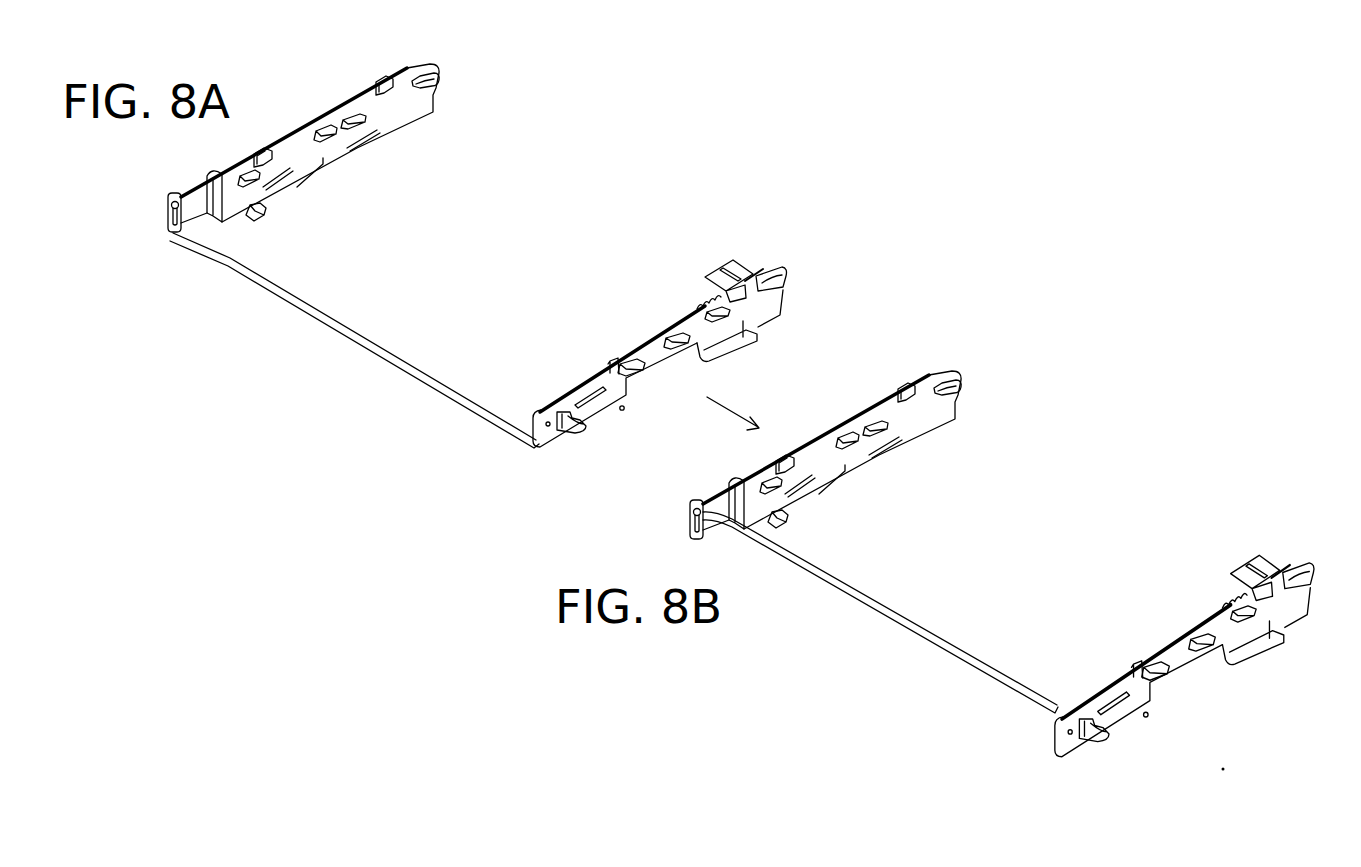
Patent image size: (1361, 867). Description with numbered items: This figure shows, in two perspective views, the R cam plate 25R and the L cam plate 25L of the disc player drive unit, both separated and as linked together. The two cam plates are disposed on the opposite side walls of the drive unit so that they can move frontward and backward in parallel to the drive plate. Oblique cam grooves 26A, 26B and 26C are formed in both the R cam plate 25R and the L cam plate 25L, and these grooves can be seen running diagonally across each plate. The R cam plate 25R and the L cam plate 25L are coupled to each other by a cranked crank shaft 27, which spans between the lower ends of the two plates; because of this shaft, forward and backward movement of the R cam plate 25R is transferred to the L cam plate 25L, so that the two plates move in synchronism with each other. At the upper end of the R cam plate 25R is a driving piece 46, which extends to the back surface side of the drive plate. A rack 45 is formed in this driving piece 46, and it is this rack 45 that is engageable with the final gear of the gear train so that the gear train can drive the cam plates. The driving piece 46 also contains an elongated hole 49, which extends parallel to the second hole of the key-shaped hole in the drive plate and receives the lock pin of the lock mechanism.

In FIG. 8A, the L cam plate 25L is at (322, 118).
In FIG. 8B, the L cam plate 25L is at (825, 438).
In FIG. 8A, the R cam plate 25R is at (660, 335).
In FIG. 8B, the R cam plate 25R is at (1180, 661).
In FIG. 8A, the cam groove 26A is at (573, 433).
In FIG. 8B, the cam groove 26A is at (1125, 744).
In FIG. 8A, the cam groove 26B is at (418, 90).
In FIG. 8B, the cam groove 26B is at (1105, 522).
In FIG. 8A, the cam groove 26C is at (245, 188).
In FIG. 8B, the cam groove 26C is at (987, 556).
In FIG. 8A, the crank shaft 27 is at (364, 342).
In FIG. 8B, the crank shaft 27 is at (913, 620).
In FIG. 8A, the rack 45 is at (697, 302).
In FIG. 8B, the rack 45 is at (1216, 566).
In FIG. 8A, the driving piece 46 is at (714, 270).
In FIG. 8B, the driving piece 46 is at (1250, 564).
In FIG. 8A, the elongated hole 49 is at (742, 268).
In FIG. 8B, the elongated hole 49 is at (1264, 530).